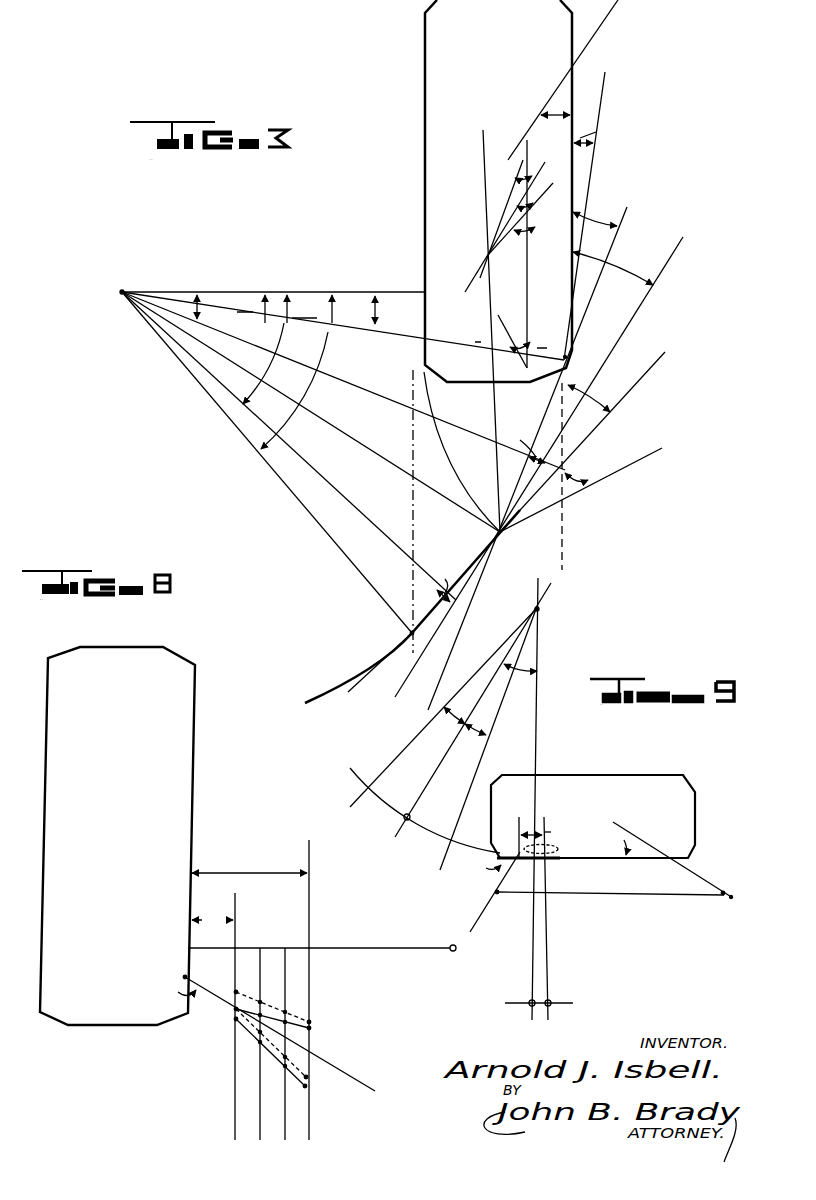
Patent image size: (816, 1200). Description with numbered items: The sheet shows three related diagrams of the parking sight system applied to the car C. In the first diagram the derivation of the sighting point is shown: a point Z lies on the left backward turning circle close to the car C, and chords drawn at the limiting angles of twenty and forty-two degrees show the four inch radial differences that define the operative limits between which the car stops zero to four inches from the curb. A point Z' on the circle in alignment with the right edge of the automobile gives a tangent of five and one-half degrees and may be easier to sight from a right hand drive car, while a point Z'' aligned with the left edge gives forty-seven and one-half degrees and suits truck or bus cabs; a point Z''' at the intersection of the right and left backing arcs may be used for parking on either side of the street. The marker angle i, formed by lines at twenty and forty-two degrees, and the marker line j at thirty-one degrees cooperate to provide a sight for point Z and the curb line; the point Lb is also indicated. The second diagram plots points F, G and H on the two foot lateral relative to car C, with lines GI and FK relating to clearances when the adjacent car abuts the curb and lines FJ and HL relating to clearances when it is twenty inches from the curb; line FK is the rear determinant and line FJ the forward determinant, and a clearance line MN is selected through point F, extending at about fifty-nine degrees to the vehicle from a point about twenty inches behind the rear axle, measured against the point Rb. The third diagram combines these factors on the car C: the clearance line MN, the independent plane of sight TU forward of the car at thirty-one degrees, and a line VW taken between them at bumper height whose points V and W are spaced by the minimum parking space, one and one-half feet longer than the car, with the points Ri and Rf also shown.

In FIG. 3, the car C is at (424, 66).
In FIG. 8, the car C is at (117, 836).
In FIG. 9, the car C is at (593, 897).
In FIG. 3, the plane of sight end point T is at (554, 80).
In FIG. 9, the plane of sight end point T is at (667, 859).
In FIG. 3, the light bulb (headlamp light source) Lb is at (335, 449).
In FIG. 9, the light bulb (headlamp light source) Lb is at (462, 799).
In FIG. 3, the marker angle i is at (483, 262).
In FIG. 3, the marker line j is at (493, 313).
In FIG. 3, the point Z is at (539, 454).
In FIG. 9, the point Z is at (396, 821).
In FIG. 3, the point Z' is at (550, 367).
In FIG. 3, the point Z'' is at (390, 628).
In FIG. 3, the point Z''' is at (412, 606).
In FIG. 8, the clearance line end point M is at (174, 980).
In FIG. 9, the clearance line end point M is at (495, 877).
In FIG. 8, the point G is at (228, 988).
In FIG. 8, the point F is at (227, 1014).
In FIG. 8, the point H is at (233, 1023).
In FIG. 8, the point I is at (312, 1021).
In FIG. 8, the point J is at (312, 1030).
In FIG. 8, the point K is at (310, 1078).
In FIG. 8, the point L is at (308, 1089).
In FIG. 8, the clearance line end point N is at (280, 1044).
In FIG. 9, the clearance line end point N is at (488, 892).
In FIG. 8, the rear reference point Rb is at (322, 990).
In FIG. 9, the point V is at (498, 894).
In FIG. 9, the point W is at (723, 889).
In FIG. 9, the plane of sight end point U is at (723, 908).
In FIG. 9, the rear inner reference point Ri is at (539, 1015).
In FIG. 9, the rear front reference point Rf is at (557, 1015).